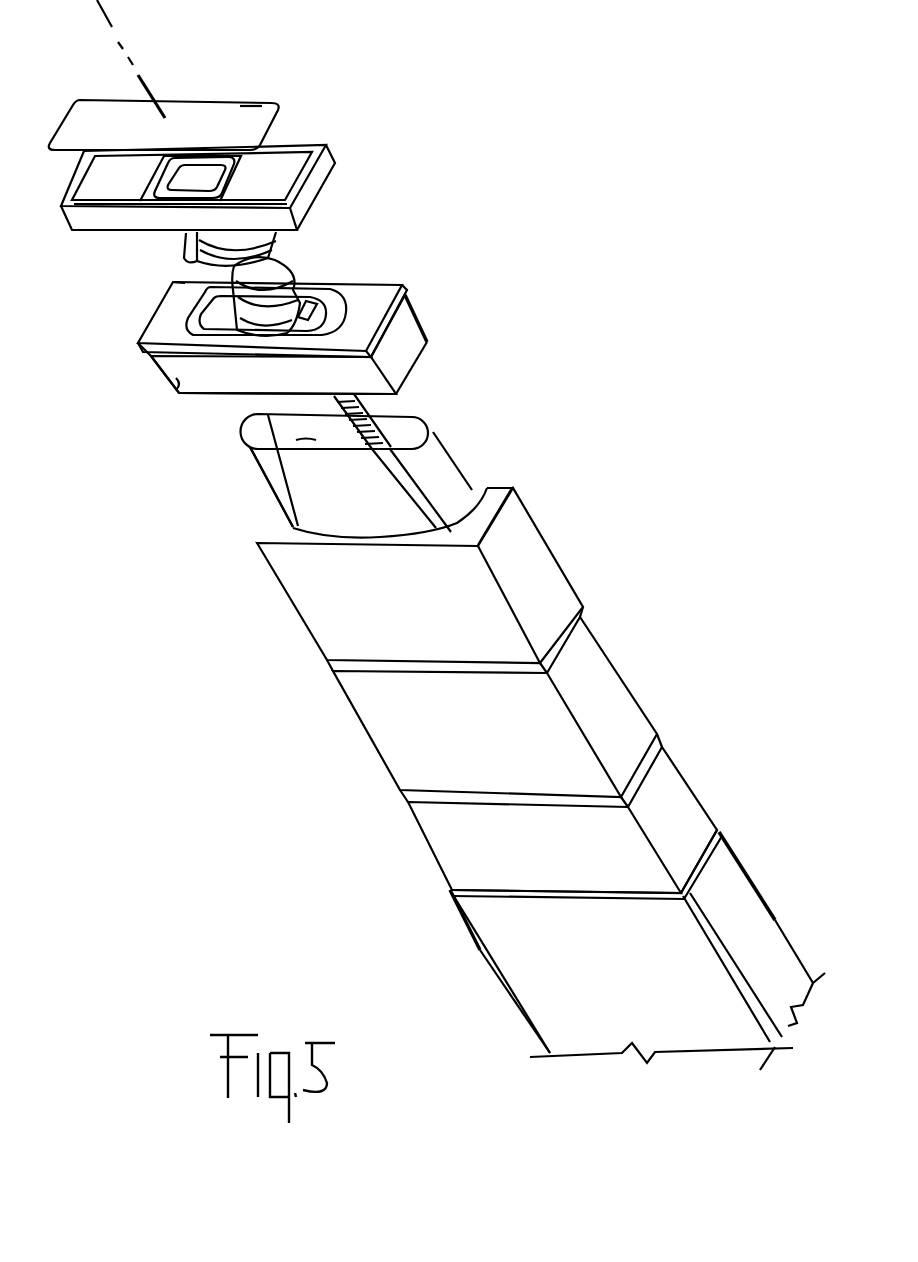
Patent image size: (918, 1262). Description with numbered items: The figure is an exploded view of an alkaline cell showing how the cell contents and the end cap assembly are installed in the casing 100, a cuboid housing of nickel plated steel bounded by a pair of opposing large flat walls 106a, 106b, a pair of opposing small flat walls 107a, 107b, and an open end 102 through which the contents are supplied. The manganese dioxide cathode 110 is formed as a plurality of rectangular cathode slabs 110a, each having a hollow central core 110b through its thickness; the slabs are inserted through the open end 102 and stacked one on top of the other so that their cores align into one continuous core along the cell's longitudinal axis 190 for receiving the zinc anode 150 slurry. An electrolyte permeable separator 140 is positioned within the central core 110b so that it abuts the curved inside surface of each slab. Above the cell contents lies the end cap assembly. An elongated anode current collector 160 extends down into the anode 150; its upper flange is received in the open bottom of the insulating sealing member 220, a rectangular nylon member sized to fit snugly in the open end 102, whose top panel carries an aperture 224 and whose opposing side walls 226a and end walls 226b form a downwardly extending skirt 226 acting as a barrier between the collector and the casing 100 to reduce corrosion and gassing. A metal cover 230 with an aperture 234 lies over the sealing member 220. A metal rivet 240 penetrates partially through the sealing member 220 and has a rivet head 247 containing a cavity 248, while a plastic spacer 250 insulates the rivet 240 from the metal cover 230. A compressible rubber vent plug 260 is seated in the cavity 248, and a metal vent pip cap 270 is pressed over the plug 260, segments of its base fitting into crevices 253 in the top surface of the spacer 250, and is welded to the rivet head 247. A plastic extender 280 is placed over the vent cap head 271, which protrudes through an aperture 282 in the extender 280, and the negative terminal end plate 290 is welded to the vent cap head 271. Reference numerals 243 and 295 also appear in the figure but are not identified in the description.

The casing 100 is at (737, 877).
The open end 102 is at (717, 823).
The large flat wall 106a is at (500, 942).
The large flat wall 106b is at (787, 930).
The small flat wall 107a is at (742, 902).
The small flat wall 107b is at (470, 932).
The cathode 110 is at (383, 737).
The cathode slab 110a is at (550, 573).
The hollow central core 110b is at (488, 490).
The separator 140 is at (460, 447).
The anode 150 is at (262, 455).
The anode current collector 160 is at (372, 408).
The longitudinal axis 190 is at (112, 29).
The insulating sealing member 220 is at (407, 337).
The aperture 224 is at (145, 350).
The skirt 226 is at (407, 397).
The side wall 226a is at (155, 398).
The end wall 226b is at (403, 355).
The metal cover 230 is at (405, 299).
The aperture 234 is at (398, 280).
The metal rivet 240 is at (230, 340).
The plate corner 243 is at (174, 283).
The rivet head 247 is at (288, 281).
The cavity 248 is at (175, 385).
The plastic spacer 250 is at (320, 297).
The crevices 253 is at (280, 332).
The rubber vent plug 260 is at (200, 294).
The vent pip cap 270 is at (274, 246).
The vent cap head 271 is at (187, 238).
The plastic extender 280 is at (325, 172).
The aperture 282 is at (180, 193).
The terminal end plate 290 is at (237, 110).
The cover plate edge 295 is at (104, 100).